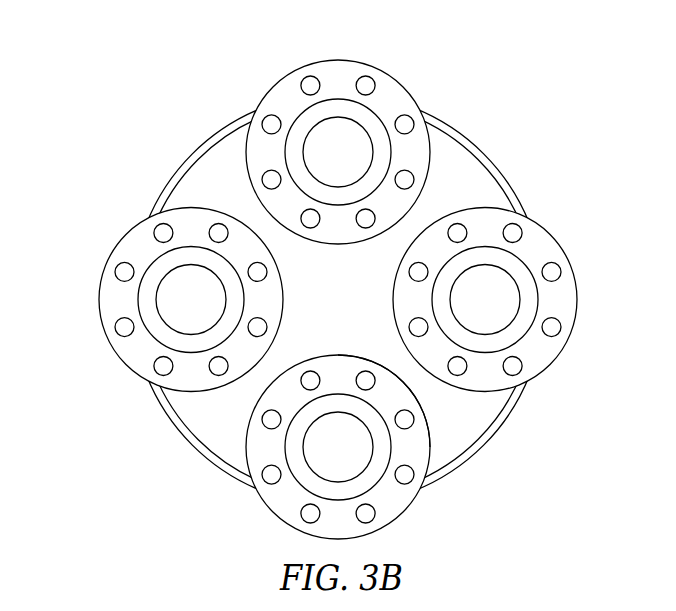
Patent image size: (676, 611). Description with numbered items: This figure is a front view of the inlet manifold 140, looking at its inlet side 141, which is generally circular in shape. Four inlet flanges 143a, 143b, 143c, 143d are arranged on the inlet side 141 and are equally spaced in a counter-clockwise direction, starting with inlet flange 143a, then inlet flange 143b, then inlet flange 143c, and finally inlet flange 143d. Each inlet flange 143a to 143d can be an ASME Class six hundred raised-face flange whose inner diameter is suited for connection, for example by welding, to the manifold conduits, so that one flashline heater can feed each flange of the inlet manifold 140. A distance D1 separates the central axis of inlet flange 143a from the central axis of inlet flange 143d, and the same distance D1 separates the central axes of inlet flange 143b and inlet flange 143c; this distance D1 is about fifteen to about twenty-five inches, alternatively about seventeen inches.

The inlet manifold 140 is at (170, 120).
The inlet side 141 is at (424, 442).
The inlet flange 143a is at (387, 501).
The inlet flange 143b is at (532, 354).
The inlet flange 143c is at (130, 350).
The inlet flange 143d is at (391, 93).
The distance between flange central axes D1 is at (485, 309).